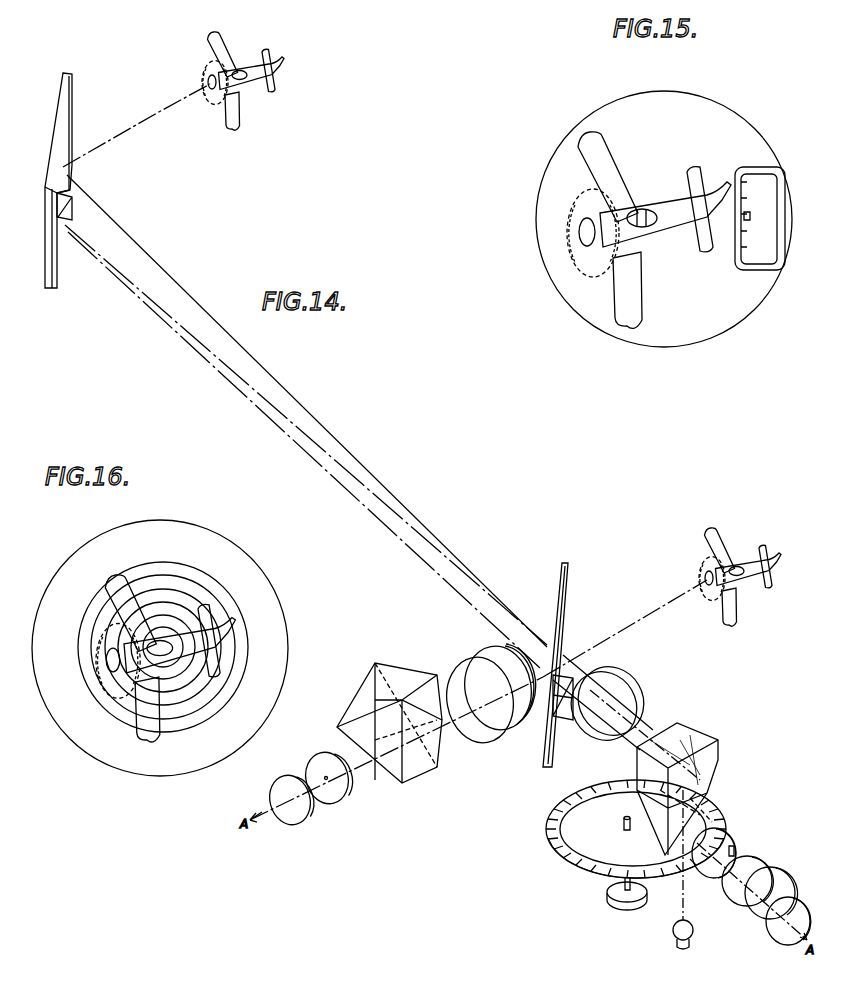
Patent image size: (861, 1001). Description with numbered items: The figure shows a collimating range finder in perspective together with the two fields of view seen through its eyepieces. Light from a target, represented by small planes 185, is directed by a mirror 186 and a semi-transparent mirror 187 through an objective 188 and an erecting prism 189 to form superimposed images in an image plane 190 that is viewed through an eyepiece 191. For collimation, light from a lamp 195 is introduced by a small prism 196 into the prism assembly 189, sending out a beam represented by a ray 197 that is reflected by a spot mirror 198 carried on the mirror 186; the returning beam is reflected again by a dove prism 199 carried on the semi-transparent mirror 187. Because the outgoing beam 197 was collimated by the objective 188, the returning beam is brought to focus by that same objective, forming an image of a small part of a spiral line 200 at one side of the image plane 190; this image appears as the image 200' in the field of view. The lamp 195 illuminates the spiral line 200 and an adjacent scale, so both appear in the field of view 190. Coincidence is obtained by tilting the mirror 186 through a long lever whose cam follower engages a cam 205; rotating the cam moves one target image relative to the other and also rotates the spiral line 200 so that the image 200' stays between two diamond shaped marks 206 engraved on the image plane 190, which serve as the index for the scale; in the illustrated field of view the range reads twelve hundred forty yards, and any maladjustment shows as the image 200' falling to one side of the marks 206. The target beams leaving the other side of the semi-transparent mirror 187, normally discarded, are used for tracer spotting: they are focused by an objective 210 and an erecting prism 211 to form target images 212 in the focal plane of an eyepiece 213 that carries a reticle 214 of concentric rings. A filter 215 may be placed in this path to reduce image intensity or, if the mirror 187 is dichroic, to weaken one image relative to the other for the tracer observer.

In FIG. 14, the target (small planes) 185 is at (244, 126).
In FIG. 14, the mirror 186 is at (70, 104).
In FIG. 14, the semi-transparent mirror 187 is at (558, 577).
In FIG. 14, the objective 188 is at (628, 688).
In FIG. 14, the erecting prism 189 is at (700, 733).
In FIG. 14, the image plane 190 is at (722, 842).
In FIG. 15, the image plane 190 is at (713, 327).
In FIG. 14, the eyepiece 191 is at (800, 883).
In FIG. 14, the lamp 195 is at (694, 938).
In FIG. 14, the small prism 196 is at (704, 798).
In FIG. 14, the ray (beam of light) 197 is at (333, 438).
In FIG. 14, the spot mirror 198 is at (62, 224).
In FIG. 14, the dove prism 199 is at (573, 722).
In FIG. 14, the spiral line 200 is at (636, 840).
In FIG. 15, the image of the spiral line 200' is at (773, 193).
In FIG. 14, the cam 205 is at (632, 908).
In FIG. 15, the diamond shaped marks 206 is at (746, 217).
In FIG. 14, the objective 210 is at (486, 736).
In FIG. 14, the erecting prism 211 is at (366, 690).
In FIG. 16, the target images 212 is at (250, 596).
In FIG. 14, the eyepiece 213 is at (355, 801).
In FIG. 16, the reticle 214 is at (172, 566).
In FIG. 14, the filter 215 is at (488, 658).